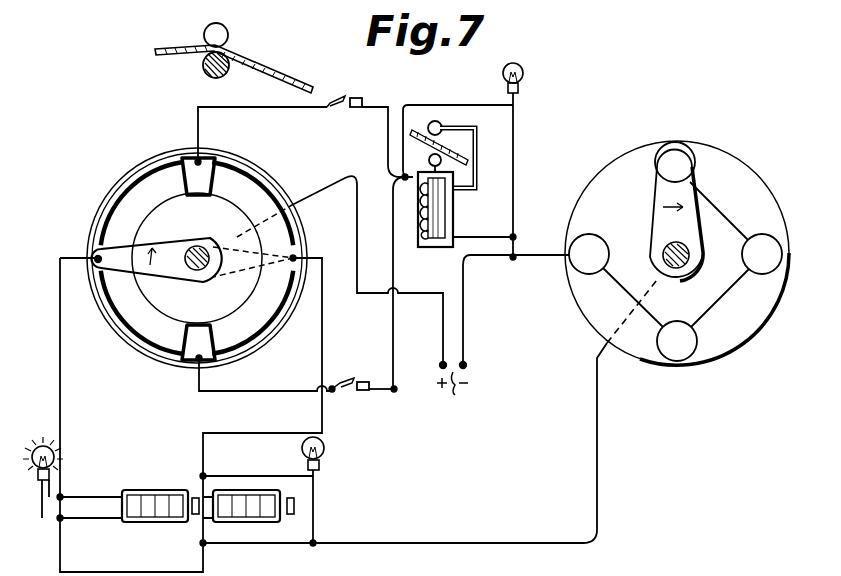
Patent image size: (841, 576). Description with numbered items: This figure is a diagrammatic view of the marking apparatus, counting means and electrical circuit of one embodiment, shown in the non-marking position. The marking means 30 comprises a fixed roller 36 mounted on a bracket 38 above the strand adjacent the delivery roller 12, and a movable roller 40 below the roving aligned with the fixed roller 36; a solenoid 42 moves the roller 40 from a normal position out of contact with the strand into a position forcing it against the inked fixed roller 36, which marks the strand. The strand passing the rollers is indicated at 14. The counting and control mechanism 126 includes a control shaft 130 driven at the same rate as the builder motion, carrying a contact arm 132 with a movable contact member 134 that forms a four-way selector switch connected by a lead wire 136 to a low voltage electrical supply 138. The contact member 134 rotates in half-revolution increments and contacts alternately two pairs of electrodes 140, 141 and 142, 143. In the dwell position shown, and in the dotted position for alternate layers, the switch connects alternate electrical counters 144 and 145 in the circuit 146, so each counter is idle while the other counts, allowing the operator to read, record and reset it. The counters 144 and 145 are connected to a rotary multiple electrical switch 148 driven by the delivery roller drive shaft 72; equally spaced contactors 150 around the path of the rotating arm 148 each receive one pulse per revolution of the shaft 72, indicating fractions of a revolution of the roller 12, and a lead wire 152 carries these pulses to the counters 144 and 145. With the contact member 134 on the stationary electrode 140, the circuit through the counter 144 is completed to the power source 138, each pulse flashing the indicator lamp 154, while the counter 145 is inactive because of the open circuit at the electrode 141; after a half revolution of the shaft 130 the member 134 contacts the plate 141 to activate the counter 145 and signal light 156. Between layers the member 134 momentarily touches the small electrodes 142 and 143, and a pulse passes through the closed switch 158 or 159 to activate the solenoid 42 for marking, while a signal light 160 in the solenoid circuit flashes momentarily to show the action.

The delivery roller 12 is at (230, 72).
The feeler lever 14 is at (286, 74).
The marking means 30 is at (507, 138).
The fixed roller 36 is at (436, 121).
The bracket 38 is at (455, 122).
The movable roller 40 is at (437, 151).
The solenoid 42 is at (455, 212).
The delivery roller drive shaft 72 is at (680, 270).
The counting and control mechanism 126 is at (158, 380).
The control shaft 130 is at (192, 284).
The contact arm 132 is at (178, 238).
The movable contact member 134 is at (96, 250).
The lead wire 136 is at (380, 246).
The low voltage electrical supply 138 is at (453, 388).
The stationary contactor plate or electrode 140 is at (135, 187).
The stationary contactor plate or electrode 141 is at (262, 192).
The small contactor plate or electrode 142 is at (208, 162).
The small contactor plate or electrode 143 is at (212, 362).
The electrical counter 144 is at (140, 524).
The electrical counter 145 is at (230, 524).
The electrical circuit 146 is at (378, 435).
The rotary multiple electrical switch 148 is at (690, 176).
The contactors 150 is at (683, 150).
The lead wire 152 is at (600, 442).
The indicator lamp 154 is at (58, 455).
The signal light 156 is at (325, 456).
The switch 158 is at (358, 96).
The switch 159 is at (356, 380).
The signal light 160 is at (524, 70).